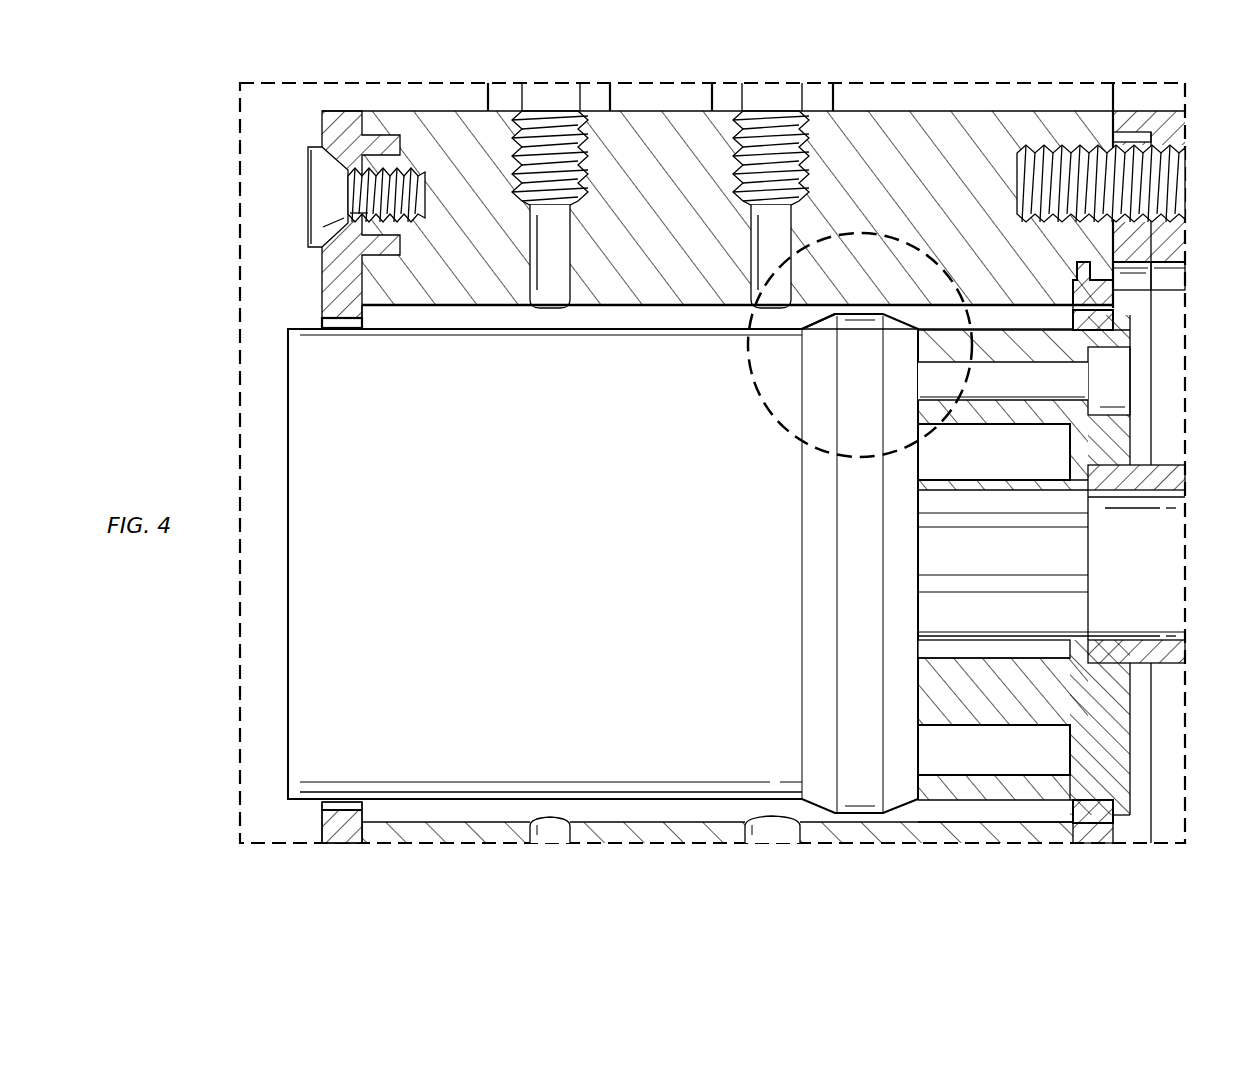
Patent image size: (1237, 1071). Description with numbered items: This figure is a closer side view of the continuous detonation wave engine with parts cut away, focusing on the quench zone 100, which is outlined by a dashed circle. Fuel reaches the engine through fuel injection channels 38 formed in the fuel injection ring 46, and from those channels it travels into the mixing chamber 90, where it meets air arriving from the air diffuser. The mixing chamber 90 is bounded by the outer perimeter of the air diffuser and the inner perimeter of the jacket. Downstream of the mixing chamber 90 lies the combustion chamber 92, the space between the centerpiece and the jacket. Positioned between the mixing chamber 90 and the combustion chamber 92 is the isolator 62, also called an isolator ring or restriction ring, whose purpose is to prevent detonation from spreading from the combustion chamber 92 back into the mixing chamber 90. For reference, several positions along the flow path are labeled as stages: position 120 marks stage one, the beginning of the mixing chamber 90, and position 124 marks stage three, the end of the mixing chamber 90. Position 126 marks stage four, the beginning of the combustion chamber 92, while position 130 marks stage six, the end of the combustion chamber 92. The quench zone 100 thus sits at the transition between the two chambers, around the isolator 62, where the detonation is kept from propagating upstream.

The fuel injection channels 38 is at (1115, 302).
The fuel injection ring 46 is at (1140, 287).
The isolator 62 is at (788, 594).
The mixing chamber 90 is at (994, 318).
The combustion chamber 92 is at (634, 318).
The quench zone 100 is at (766, 400).
The position 120 is at (1073, 318).
The position 124 is at (872, 316).
The position 126 is at (823, 318).
The position 130 is at (326, 328).